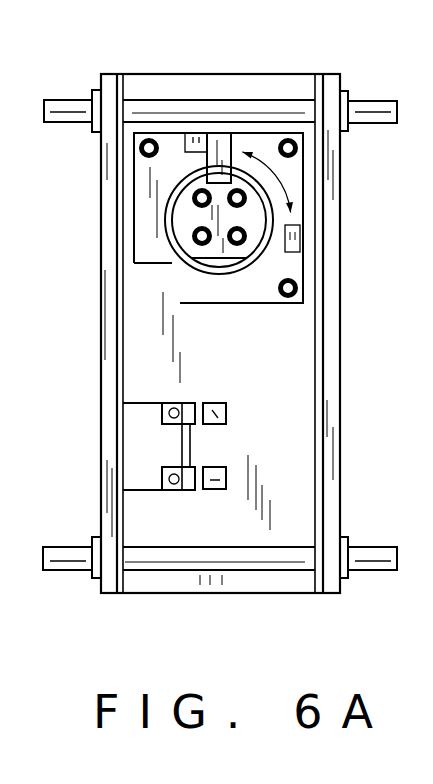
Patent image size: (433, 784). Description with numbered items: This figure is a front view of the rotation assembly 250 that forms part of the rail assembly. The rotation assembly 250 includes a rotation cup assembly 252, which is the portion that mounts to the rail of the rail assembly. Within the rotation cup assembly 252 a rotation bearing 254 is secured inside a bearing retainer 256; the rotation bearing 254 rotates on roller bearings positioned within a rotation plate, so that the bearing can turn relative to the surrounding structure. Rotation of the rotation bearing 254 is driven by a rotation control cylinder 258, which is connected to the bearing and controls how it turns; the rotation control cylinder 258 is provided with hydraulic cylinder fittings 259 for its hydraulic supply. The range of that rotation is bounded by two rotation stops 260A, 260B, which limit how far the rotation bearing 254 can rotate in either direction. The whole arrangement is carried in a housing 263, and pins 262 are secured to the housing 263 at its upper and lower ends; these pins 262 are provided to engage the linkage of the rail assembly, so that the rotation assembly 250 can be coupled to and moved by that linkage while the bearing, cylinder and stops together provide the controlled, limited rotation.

The rotation assembly 250 is at (220, 304).
The rotation cup assembly 252 is at (280, 279).
The rotation bearing 254 is at (257, 258).
The bearing retainer 256 is at (218, 260).
The rotation control cylinder 258 is at (145, 443).
The hydraulic cylinder fittings 259 is at (213, 471).
The rotation stop 260A is at (213, 160).
The rotation stop 260B is at (147, 338).
The pins 262 is at (240, 110).
The housing 263 is at (328, 350).